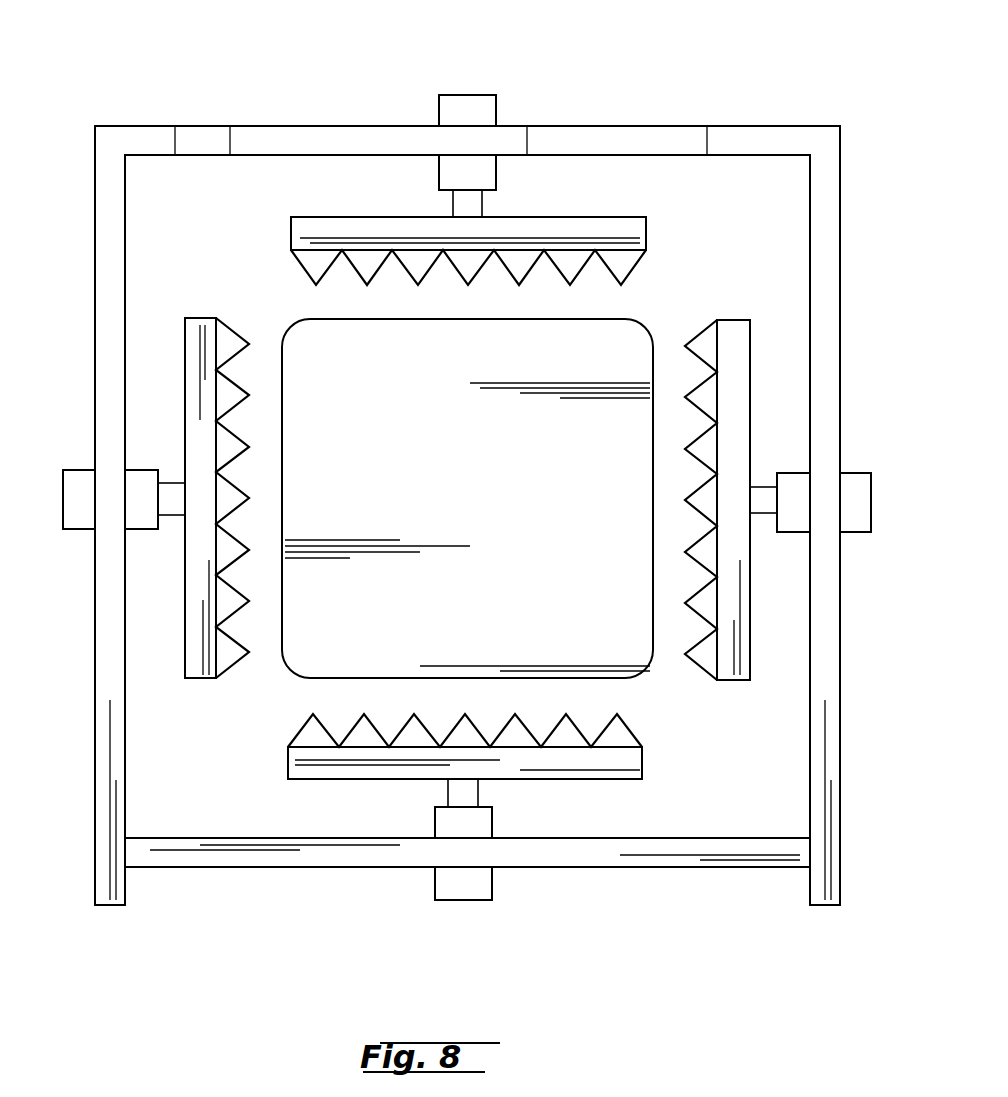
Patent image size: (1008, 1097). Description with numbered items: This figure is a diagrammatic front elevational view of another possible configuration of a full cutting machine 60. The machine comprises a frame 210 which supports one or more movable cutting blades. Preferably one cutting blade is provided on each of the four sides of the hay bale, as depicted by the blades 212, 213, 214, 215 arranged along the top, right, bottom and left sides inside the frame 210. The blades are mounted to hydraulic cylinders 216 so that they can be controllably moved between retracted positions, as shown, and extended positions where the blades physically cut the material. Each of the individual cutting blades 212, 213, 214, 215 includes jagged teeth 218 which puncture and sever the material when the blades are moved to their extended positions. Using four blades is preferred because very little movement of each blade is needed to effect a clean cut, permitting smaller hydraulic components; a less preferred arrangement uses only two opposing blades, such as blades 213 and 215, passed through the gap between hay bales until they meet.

The full cutting machine 60 is at (700, 908).
The frame 210 is at (825, 315).
The cutting blade 212 is at (551, 230).
The cutting blade 213 is at (733, 348).
The cutting blade 214 is at (405, 765).
The cutting blade 215 is at (193, 643).
The hydraulic cylinders 216 is at (465, 108).
The jagged teeth 218 is at (315, 262).